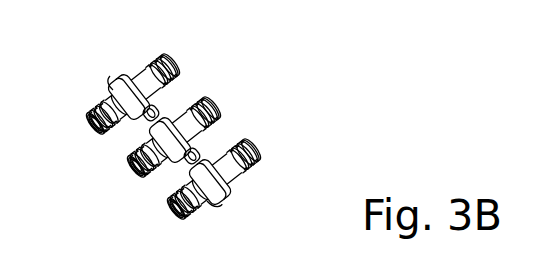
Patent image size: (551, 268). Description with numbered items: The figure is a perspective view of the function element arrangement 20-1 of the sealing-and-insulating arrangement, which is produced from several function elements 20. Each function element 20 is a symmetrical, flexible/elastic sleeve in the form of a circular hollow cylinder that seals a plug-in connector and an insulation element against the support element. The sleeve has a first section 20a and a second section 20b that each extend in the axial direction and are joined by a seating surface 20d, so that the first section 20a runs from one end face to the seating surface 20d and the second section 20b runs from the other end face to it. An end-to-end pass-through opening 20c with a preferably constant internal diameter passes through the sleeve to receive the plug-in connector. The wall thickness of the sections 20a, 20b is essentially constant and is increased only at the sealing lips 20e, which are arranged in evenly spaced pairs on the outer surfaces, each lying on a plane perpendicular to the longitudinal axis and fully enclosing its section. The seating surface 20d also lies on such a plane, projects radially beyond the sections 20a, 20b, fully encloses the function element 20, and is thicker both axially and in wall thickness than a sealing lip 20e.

The function element arrangement 20-1 is at (337, 89).
The function element 20 is at (164, 47).
The first section 20a is at (143, 79).
The second section 20b is at (113, 90).
The pass-through opening 20c is at (100, 128).
The seating surface 20d is at (122, 80).
The sealing lips 20e is at (150, 64).